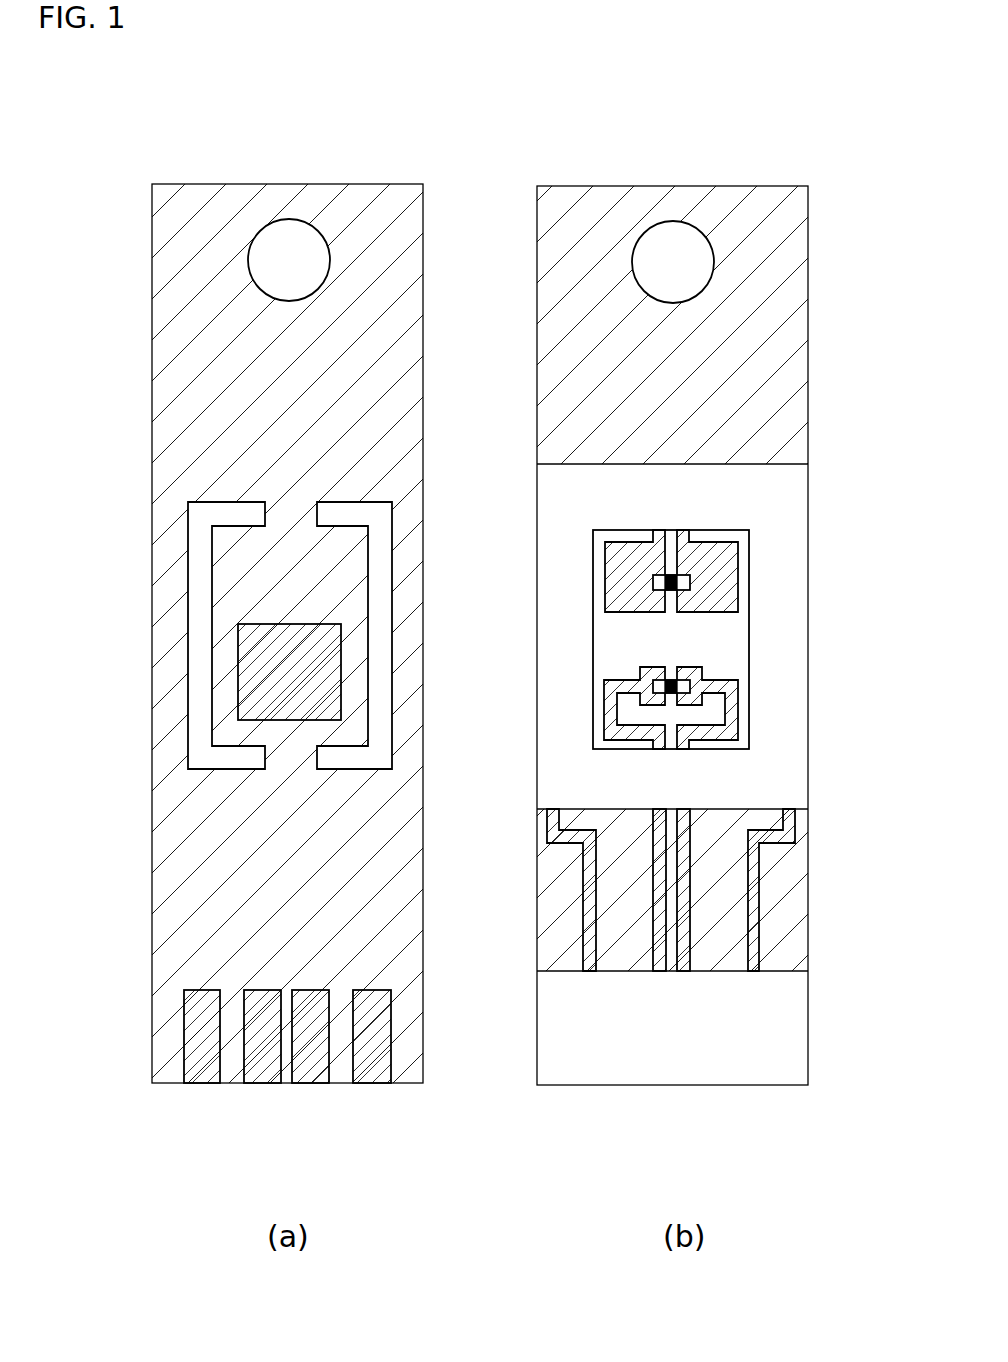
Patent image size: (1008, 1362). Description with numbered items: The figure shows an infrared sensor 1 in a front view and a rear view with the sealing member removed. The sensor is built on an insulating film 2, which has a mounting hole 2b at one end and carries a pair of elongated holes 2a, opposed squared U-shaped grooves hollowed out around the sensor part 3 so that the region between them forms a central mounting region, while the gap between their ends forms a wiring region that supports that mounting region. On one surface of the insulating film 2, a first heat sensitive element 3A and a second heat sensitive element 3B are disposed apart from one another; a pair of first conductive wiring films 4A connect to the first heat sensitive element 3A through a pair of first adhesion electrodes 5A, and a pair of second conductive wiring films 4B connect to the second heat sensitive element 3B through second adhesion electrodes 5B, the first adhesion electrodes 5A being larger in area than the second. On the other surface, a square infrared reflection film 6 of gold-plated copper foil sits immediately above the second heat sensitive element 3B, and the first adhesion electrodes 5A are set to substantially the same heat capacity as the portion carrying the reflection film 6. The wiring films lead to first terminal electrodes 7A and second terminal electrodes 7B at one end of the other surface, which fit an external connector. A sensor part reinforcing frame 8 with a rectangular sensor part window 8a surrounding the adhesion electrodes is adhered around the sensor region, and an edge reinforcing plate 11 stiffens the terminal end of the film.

The infrared sensor 1 is at (432, 180).
The insulating film 2 is at (413, 478).
The elongated holes 2a is at (190, 625).
The mounting hole 2b is at (268, 228).
The sensor part 3 is at (228, 603).
The first heat sensitive element 3A is at (690, 578).
The second heat sensitive element 3B is at (690, 685).
The first conductive wiring films 4A is at (738, 602).
The second conductive wiring films 4B is at (738, 733).
The first adhesion electrodes 5A is at (738, 543).
The second adhesion electrodes 5B is at (687, 667).
The infrared reflection film 6 is at (341, 673).
The first terminal electrodes 7A is at (206, 1075).
The second terminal electrodes 7B is at (266, 1075).
The sensor part reinforcing frame 8 is at (787, 792).
The sensor part window 8a is at (595, 632).
The edge reinforcing plate 11 is at (770, 993).